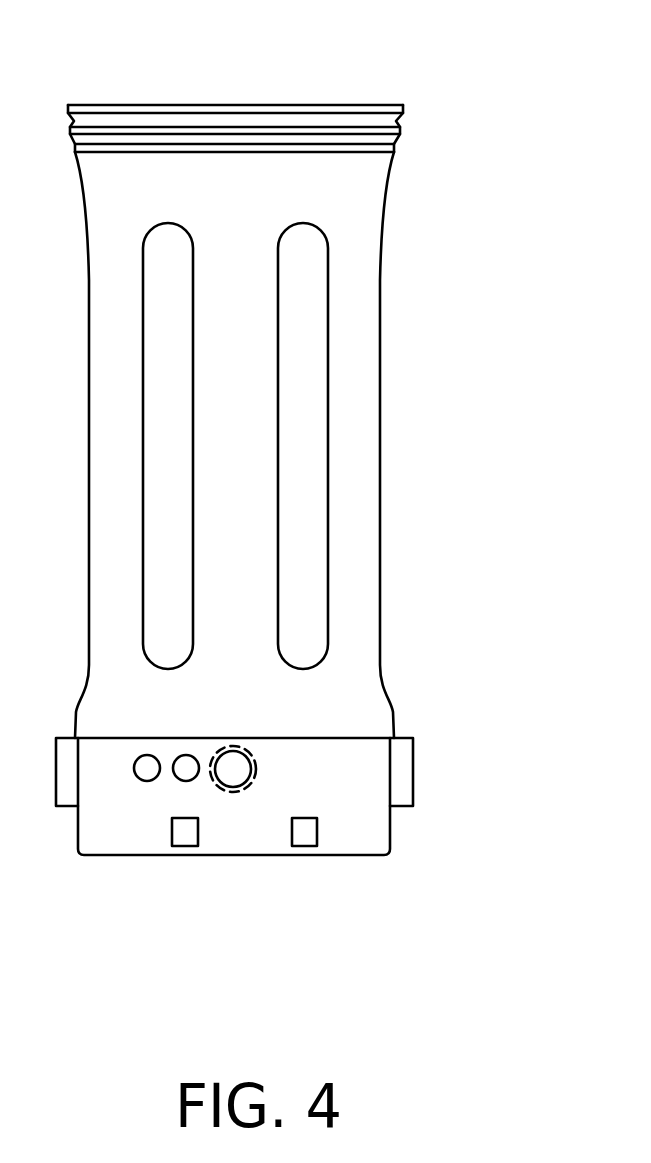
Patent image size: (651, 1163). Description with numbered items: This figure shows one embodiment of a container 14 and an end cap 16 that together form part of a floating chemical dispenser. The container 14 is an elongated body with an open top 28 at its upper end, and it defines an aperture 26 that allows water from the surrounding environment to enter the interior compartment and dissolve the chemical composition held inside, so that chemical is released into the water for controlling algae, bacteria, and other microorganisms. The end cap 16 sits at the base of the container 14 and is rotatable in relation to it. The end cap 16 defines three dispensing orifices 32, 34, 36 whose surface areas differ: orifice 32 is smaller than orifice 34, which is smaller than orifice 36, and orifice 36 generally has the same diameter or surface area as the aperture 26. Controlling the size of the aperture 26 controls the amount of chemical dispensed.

The container 14 is at (362, 402).
The end cap 16 is at (413, 773).
The aperture 26 is at (253, 776).
The open top 28 is at (233, 96).
The orifice 32 is at (148, 763).
The orifice 34 is at (187, 758).
The orifice 36 is at (237, 767).